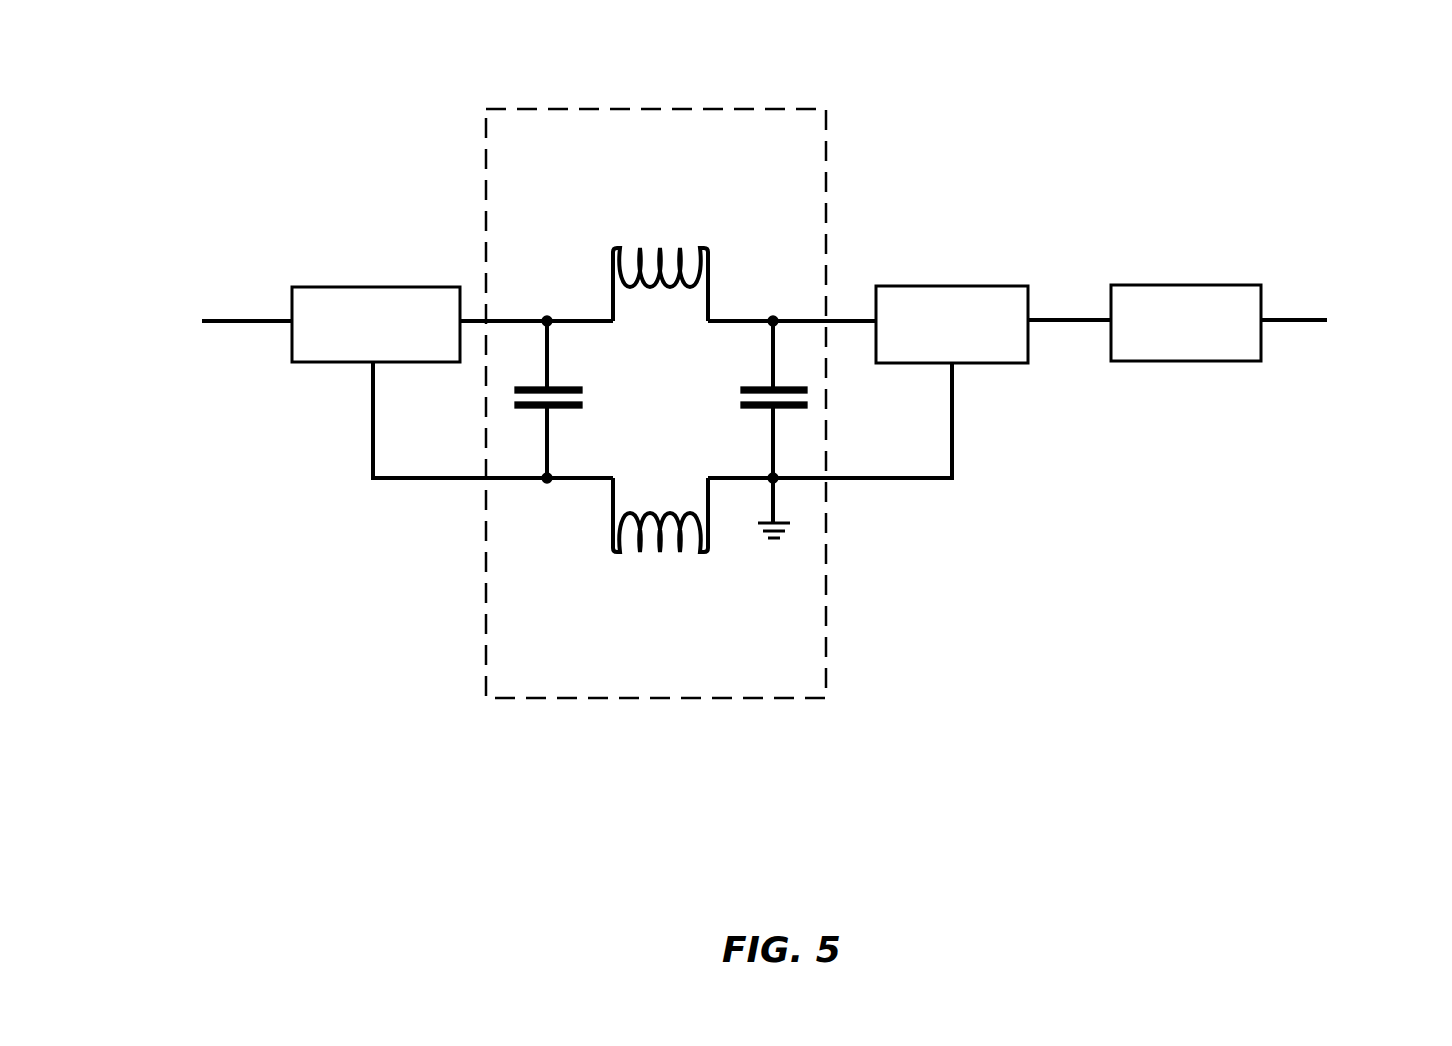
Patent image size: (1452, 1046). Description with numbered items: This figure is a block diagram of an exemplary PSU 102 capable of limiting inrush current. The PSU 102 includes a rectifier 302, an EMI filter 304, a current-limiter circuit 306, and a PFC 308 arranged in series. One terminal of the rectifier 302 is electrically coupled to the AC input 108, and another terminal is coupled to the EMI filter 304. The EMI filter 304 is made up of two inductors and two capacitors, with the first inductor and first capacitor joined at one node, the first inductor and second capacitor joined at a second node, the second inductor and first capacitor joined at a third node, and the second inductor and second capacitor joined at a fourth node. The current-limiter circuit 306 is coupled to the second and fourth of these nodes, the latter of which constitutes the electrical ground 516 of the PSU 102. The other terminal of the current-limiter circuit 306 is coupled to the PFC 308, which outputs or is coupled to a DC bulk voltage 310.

The PSU 102 is at (212, 130).
The AC input 108 is at (203, 330).
The rectifier 302 is at (376, 324).
The EMI filter 304 is at (826, 167).
The current-limiter circuit 306 is at (952, 324).
The PFC 308 is at (1186, 323).
The DC bulk voltage 310 is at (1340, 331).
The electrical ground 516 is at (782, 539).